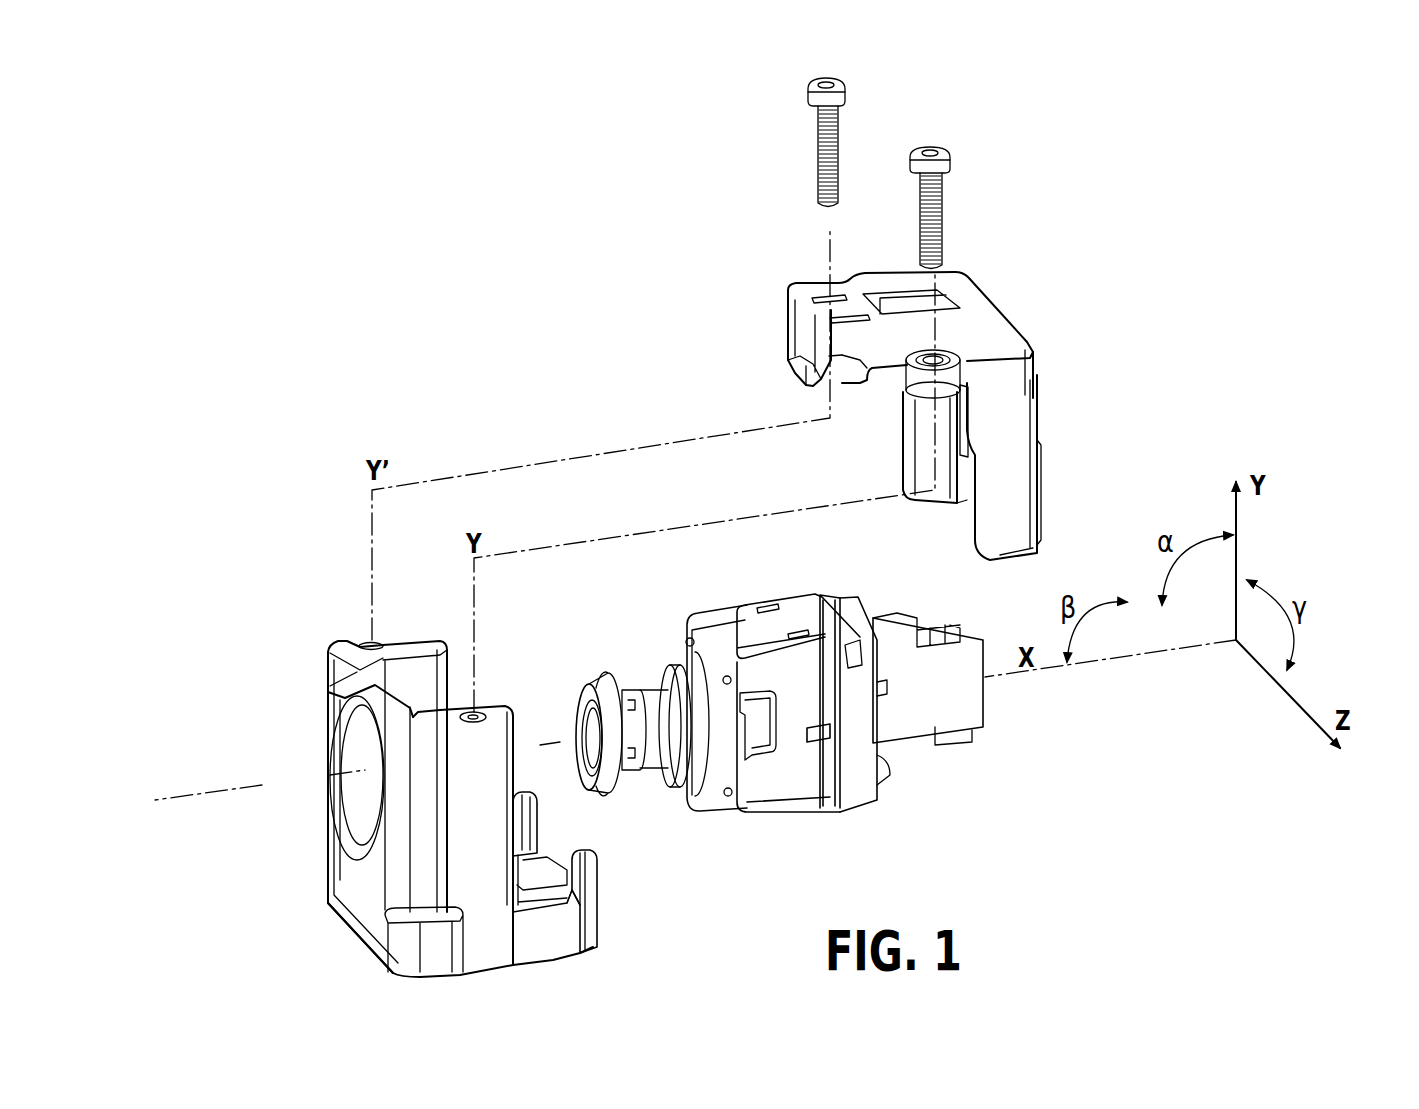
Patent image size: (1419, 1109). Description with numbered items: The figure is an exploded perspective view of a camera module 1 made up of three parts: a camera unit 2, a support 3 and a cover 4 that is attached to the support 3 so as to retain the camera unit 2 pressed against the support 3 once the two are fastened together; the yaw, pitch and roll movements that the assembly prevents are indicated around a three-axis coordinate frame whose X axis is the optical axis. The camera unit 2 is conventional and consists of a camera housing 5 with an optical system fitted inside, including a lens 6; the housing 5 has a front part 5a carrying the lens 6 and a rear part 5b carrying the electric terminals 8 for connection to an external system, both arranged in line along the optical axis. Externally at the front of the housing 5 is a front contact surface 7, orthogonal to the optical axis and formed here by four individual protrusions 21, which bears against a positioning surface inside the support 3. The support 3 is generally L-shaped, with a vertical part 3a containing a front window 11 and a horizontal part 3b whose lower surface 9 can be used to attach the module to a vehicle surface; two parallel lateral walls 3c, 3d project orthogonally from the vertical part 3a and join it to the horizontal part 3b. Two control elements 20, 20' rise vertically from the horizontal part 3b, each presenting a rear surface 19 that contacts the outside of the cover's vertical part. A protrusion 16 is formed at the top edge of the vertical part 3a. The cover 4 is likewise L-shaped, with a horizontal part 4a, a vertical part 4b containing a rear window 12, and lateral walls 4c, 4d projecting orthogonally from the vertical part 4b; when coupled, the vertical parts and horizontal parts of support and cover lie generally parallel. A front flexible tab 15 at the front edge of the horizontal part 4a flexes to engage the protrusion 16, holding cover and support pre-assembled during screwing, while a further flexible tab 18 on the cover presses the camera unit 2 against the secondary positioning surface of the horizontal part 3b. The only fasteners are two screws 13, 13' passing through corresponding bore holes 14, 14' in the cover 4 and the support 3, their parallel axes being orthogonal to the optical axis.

The camera module 1 is at (527, 440).
The camera unit 2 is at (864, 816).
The support 3 is at (278, 650).
The vertical part 3a is at (337, 857).
The horizontal part 3b is at (443, 943).
The lateral wall 3c is at (418, 869).
The lateral wall 3d is at (425, 643).
The cover 4 is at (1062, 462).
The horizontal part 4a is at (990, 332).
The vertical part 4b is at (1038, 482).
The lateral wall 4c is at (1003, 512).
The lateral wall 4d is at (920, 458).
The camera housing 5 is at (800, 793).
The front part 5a is at (645, 698).
The rear part 5b is at (888, 663).
The lens 6 is at (588, 718).
The front contact surface 7 is at (716, 785).
The electric terminals 8 is at (948, 637).
The lower surface 9 is at (340, 922).
The front window 11 is at (350, 783).
The rear window 12 is at (968, 413).
The screw 13 is at (985, 208).
The screw 13' is at (883, 136).
The bore hole 14 is at (767, 479).
The bore hole 14' is at (341, 581).
The front flexible tab 15 is at (812, 343).
The protrusion 16 is at (327, 667).
The flexible tab 18 is at (910, 306).
The rear surface 19 is at (585, 893).
The control element 20 is at (623, 901).
The control element 20' is at (587, 824).
The protrusion 21 is at (735, 810).